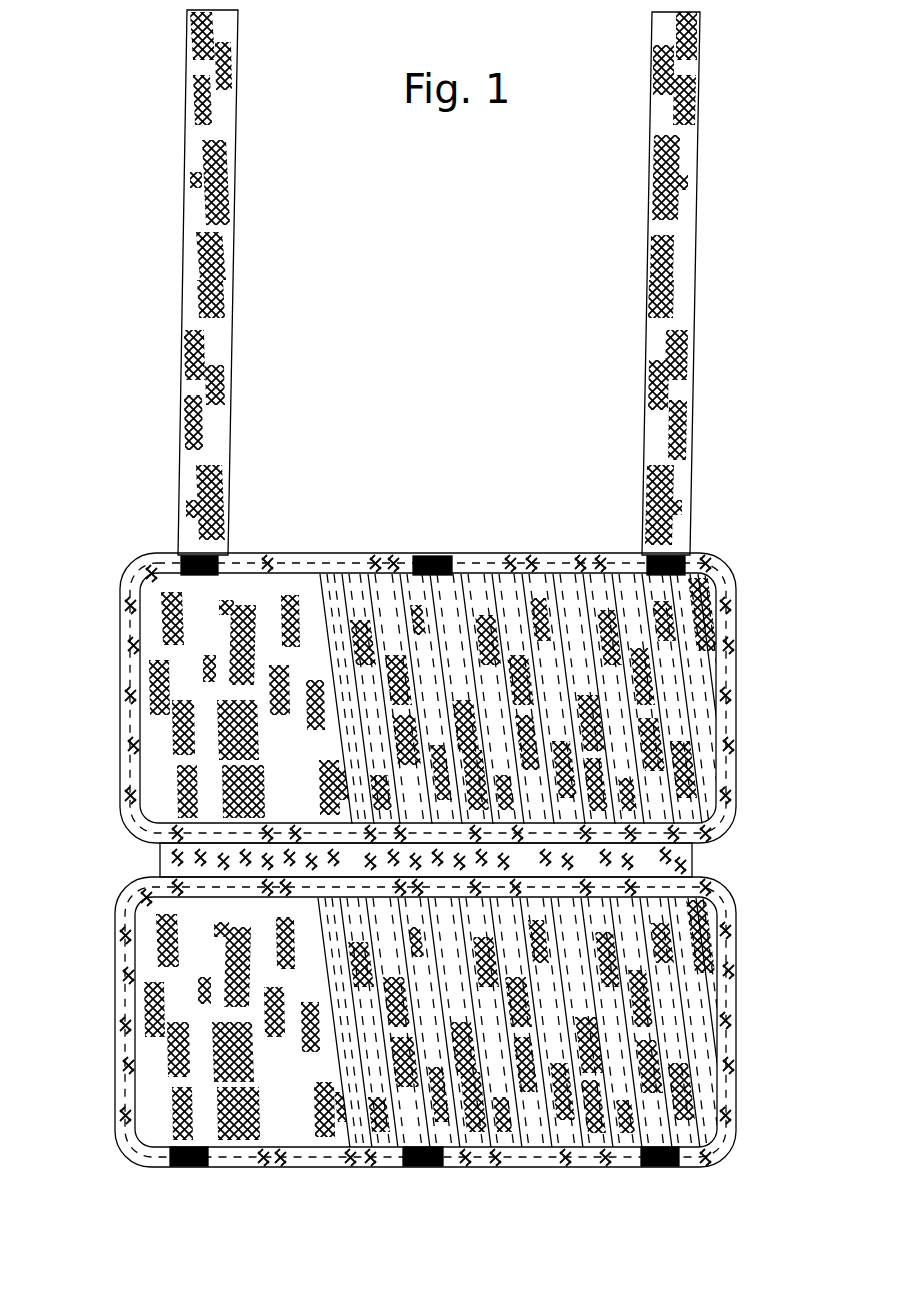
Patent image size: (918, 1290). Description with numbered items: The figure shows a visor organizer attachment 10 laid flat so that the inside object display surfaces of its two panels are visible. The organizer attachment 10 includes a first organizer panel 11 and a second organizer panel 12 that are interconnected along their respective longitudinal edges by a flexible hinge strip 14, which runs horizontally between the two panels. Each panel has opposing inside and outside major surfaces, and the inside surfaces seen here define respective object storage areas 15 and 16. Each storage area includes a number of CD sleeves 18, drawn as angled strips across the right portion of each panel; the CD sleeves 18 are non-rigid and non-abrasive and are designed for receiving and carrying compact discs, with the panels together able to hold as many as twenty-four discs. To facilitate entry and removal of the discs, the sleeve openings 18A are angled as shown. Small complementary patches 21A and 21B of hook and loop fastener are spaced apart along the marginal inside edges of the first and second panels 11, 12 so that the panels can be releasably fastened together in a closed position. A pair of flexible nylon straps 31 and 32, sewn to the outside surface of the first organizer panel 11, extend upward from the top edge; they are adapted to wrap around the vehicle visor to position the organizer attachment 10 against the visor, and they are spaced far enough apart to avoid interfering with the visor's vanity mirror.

The organizer attachment 10 is at (86, 463).
The first organizer panel 11 is at (127, 666).
The second organizer panel 12 is at (118, 1020).
The flexible hinge strip 14 is at (162, 863).
The object storage area 15 is at (273, 600).
The object storage area 16 is at (155, 1052).
The CD sleeves 18 is at (657, 641).
The sleeve openings 18A is at (668, 737).
The hook and loop fastener patches 21A is at (190, 1167).
The complementary hook and loop fastener patches 21B is at (195, 557).
The flexible nylon strap 31 is at (688, 282).
The flexible nylon strap 32 is at (186, 280).